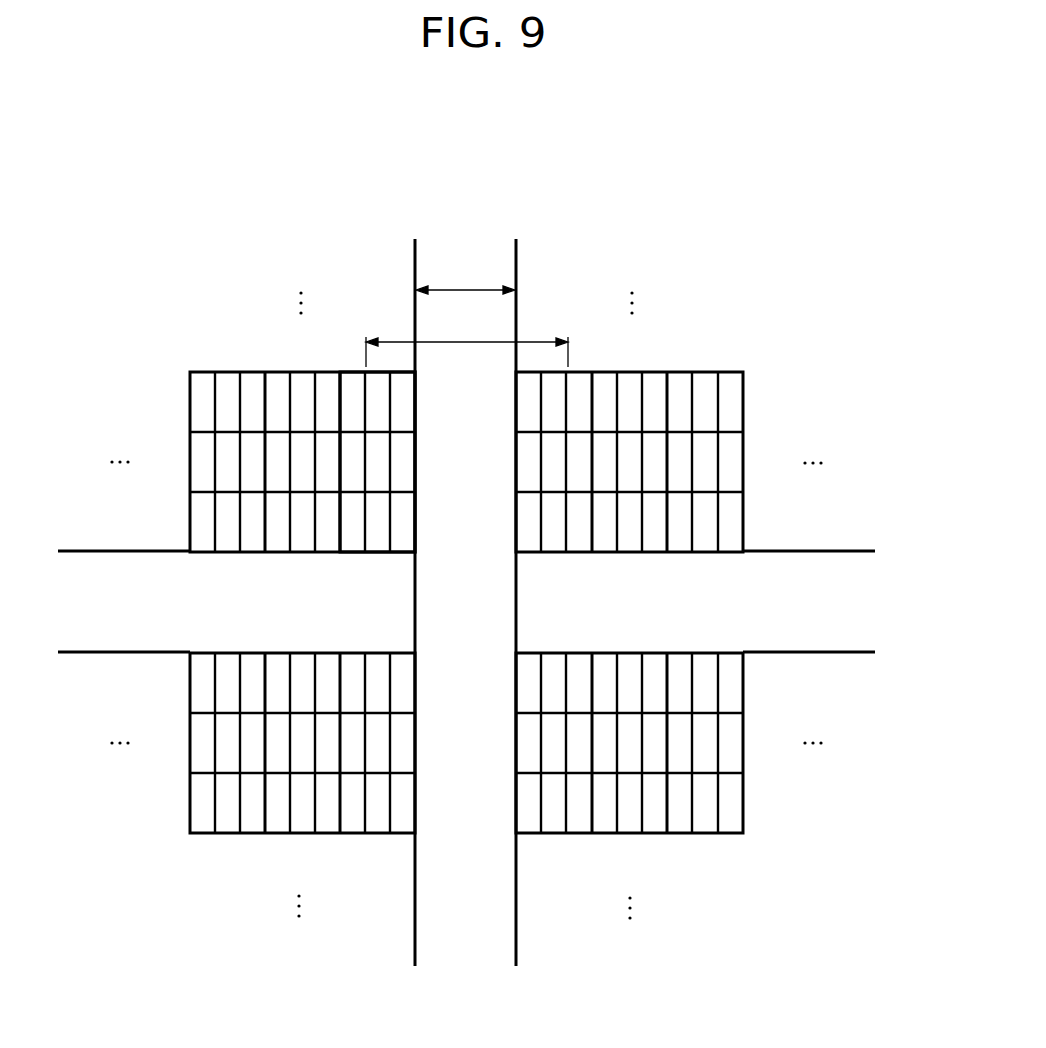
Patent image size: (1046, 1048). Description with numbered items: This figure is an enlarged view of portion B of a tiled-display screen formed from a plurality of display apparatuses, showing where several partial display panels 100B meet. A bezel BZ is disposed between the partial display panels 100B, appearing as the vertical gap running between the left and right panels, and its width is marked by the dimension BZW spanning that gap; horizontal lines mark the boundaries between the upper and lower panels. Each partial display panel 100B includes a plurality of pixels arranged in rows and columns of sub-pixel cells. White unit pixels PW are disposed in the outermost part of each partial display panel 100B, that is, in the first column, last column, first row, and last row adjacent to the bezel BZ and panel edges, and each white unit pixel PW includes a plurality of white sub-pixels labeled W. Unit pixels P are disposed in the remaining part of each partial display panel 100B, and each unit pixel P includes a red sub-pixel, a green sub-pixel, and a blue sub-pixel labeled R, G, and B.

The partial display panel 100B is at (120, 553).
The portion B is at (466, 517).
The bezel BZ is at (462, 245).
The bezel width BZW is at (465, 279).
The unit pixel P is at (226, 370).
The white unit pixel PW is at (348, 370).